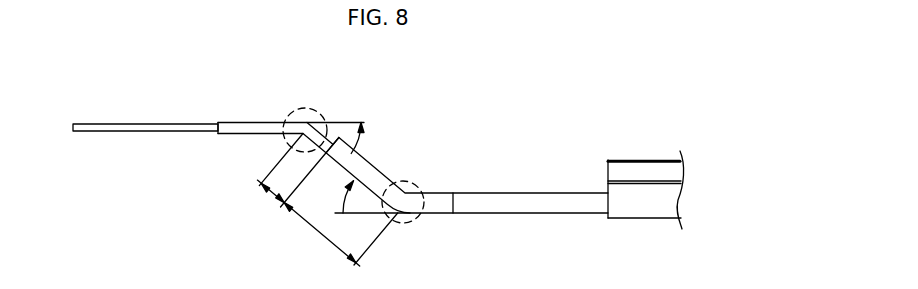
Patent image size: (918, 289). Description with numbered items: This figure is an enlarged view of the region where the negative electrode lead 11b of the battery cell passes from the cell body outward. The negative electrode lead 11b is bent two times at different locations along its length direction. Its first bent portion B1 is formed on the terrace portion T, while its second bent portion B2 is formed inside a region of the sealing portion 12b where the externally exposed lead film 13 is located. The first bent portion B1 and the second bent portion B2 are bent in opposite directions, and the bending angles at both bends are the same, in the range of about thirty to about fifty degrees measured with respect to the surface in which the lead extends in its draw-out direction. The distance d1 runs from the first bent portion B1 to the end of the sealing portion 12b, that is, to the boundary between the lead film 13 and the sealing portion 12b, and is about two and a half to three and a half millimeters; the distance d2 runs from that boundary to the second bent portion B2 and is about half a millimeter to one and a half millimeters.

The negative electrode lead 11b is at (137, 122).
The lead film 13 is at (243, 122).
The sealing portion 12b is at (504, 192).
The first bent portion B1 is at (411, 188).
The second bent portion B2 is at (303, 107).
The terrace portion T is at (556, 176).
The distance from first bent portion to end of sealing portion d1 is at (341, 234).
The distance from boundary portion to second bent portion d2 is at (294, 175).